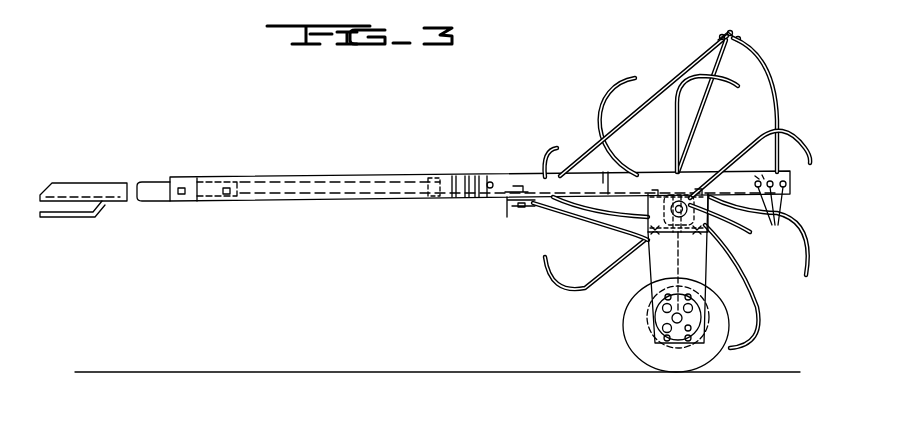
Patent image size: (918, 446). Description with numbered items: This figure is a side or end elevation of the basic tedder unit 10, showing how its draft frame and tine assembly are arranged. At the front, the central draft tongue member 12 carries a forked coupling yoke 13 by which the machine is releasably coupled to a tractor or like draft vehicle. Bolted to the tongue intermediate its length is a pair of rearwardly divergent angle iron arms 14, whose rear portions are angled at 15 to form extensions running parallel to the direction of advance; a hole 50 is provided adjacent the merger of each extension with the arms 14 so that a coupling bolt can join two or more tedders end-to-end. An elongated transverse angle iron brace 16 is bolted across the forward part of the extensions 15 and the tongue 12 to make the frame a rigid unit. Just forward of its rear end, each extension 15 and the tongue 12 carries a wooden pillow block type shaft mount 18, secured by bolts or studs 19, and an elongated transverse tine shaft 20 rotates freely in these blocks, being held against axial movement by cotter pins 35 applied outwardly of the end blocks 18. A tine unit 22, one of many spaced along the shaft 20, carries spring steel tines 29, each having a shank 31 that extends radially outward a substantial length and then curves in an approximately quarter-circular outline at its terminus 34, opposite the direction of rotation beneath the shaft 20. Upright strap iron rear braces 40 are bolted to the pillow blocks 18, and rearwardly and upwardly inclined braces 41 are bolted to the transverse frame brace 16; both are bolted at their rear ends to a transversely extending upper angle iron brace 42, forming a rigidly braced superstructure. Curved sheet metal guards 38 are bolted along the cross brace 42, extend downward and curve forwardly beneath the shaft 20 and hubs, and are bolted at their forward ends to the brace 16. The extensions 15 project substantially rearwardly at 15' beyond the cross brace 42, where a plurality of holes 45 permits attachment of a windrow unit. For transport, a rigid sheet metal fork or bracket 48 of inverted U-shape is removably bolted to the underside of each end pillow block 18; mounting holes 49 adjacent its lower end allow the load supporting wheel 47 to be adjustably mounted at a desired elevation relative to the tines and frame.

The tedder unit 10 is at (513, 246).
The central draft tongue member 12 is at (103, 190).
The forked coupling yoke 13 is at (80, 219).
The rearwardly divergent angle iron arms 14 is at (414, 183).
The extensions 15 is at (560, 148).
The rearward projection of extensions 15' is at (790, 189).
The transverse angle iron brace 16 is at (511, 218).
The pillow block shaft mount 18 is at (715, 236).
The bolts or studs 19 is at (636, 227).
The transverse tine shaft 20 is at (683, 204).
The tine unit 22 is at (727, 259).
The tines 29 is at (601, 113).
The tine shank 31 is at (637, 166).
The curved terminus 34 is at (612, 86).
The cotter pins 35 is at (665, 209).
The guards 38 is at (779, 110).
The upright strap iron rear braces 40 is at (698, 120).
The rearwardly and upwardly inclined braces 41 is at (662, 88).
The upper angle iron brace 42 is at (731, 45).
The holes 45 is at (774, 217).
The load supporting wheel 47 is at (692, 358).
The sheet metal fork or bracket 48 is at (645, 256).
The mounting holes 49 is at (692, 309).
The coupling hole 50 is at (493, 182).